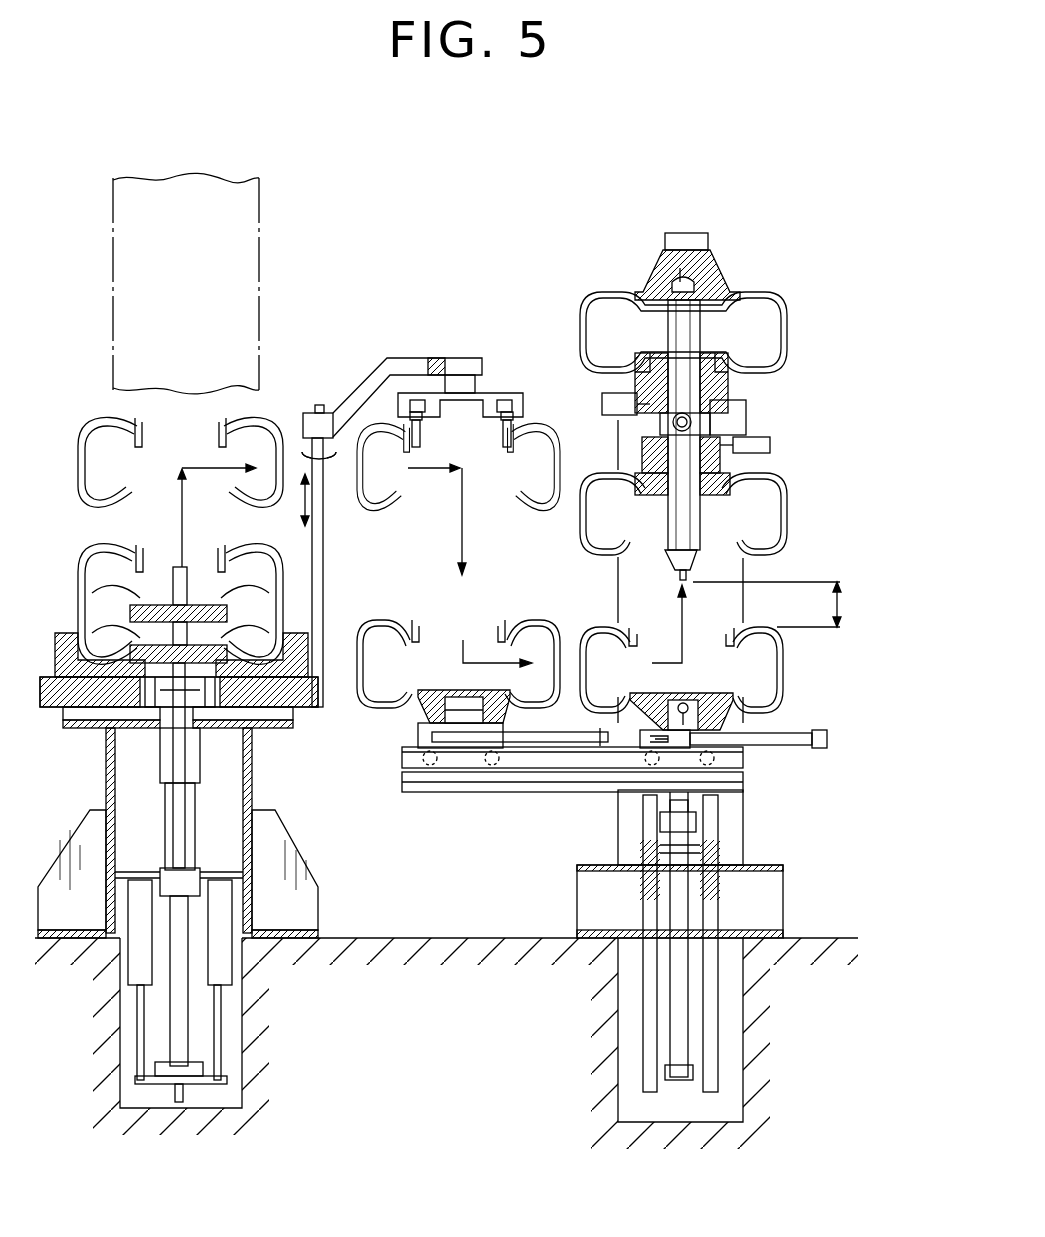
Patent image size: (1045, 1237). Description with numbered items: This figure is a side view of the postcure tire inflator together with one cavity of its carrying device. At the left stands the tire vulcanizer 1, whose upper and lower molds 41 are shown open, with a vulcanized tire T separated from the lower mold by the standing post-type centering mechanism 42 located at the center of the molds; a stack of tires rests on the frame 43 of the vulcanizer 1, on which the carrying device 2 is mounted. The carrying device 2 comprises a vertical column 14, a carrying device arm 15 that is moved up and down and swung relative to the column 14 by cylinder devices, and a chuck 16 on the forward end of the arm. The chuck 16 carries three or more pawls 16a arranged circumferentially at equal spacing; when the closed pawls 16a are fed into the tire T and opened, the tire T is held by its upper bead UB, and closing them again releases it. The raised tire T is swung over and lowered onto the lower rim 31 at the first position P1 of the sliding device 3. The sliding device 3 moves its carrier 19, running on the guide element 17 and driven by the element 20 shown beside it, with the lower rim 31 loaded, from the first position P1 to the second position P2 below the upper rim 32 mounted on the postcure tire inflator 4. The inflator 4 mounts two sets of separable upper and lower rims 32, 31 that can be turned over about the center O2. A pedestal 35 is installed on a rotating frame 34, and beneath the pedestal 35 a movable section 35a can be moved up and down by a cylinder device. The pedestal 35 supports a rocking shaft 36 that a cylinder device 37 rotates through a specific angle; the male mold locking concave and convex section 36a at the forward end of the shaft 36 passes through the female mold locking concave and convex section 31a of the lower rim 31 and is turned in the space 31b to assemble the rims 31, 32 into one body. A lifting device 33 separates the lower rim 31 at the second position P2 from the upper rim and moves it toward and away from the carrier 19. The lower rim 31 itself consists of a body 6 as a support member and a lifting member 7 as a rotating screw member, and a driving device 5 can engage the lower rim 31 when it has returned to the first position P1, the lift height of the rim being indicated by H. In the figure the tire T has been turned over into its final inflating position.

The tire vulcanizer 1 is at (272, 981).
The carrying device 2 is at (320, 393).
The sliding device 3 is at (480, 855).
The postcure tire inflator 4 is at (520, 1035).
The driving device 5 is at (729, 640).
The body 6 is at (696, 514).
The lifting member 7 is at (698, 332).
The vertical column 14 is at (324, 553).
The carrying device arm 15 is at (435, 358).
The chuck 16 is at (506, 385).
The pawls 16a is at (421, 440).
The guide rail 17 is at (562, 762).
The carrier 19 is at (745, 778).
The drive cylinder 20 is at (790, 733).
The lower rim 31 is at (716, 280).
The female mold locking concave and convex section 31a is at (689, 706).
The space 31b is at (684, 702).
The upper rim 32 is at (634, 371).
The lifting device 33 is at (735, 843).
The rotating frame 34 is at (712, 428).
The pedestal 35 is at (722, 460).
The movable section 35a is at (733, 490).
The rocking shaft 36 is at (699, 545).
The male mold locking concave and convex section 36a is at (694, 570).
The cylinder device 37 is at (770, 445).
The upper and lower molds 41 is at (288, 676).
The centering mechanism 42 is at (200, 800).
The frame 43 is at (259, 263).
The center O2 is at (692, 424).
The first position P1 is at (460, 760).
The second position P2 is at (676, 782).
The upper bead UB is at (510, 452).
The tire T is at (288, 557).
The height H is at (852, 605).